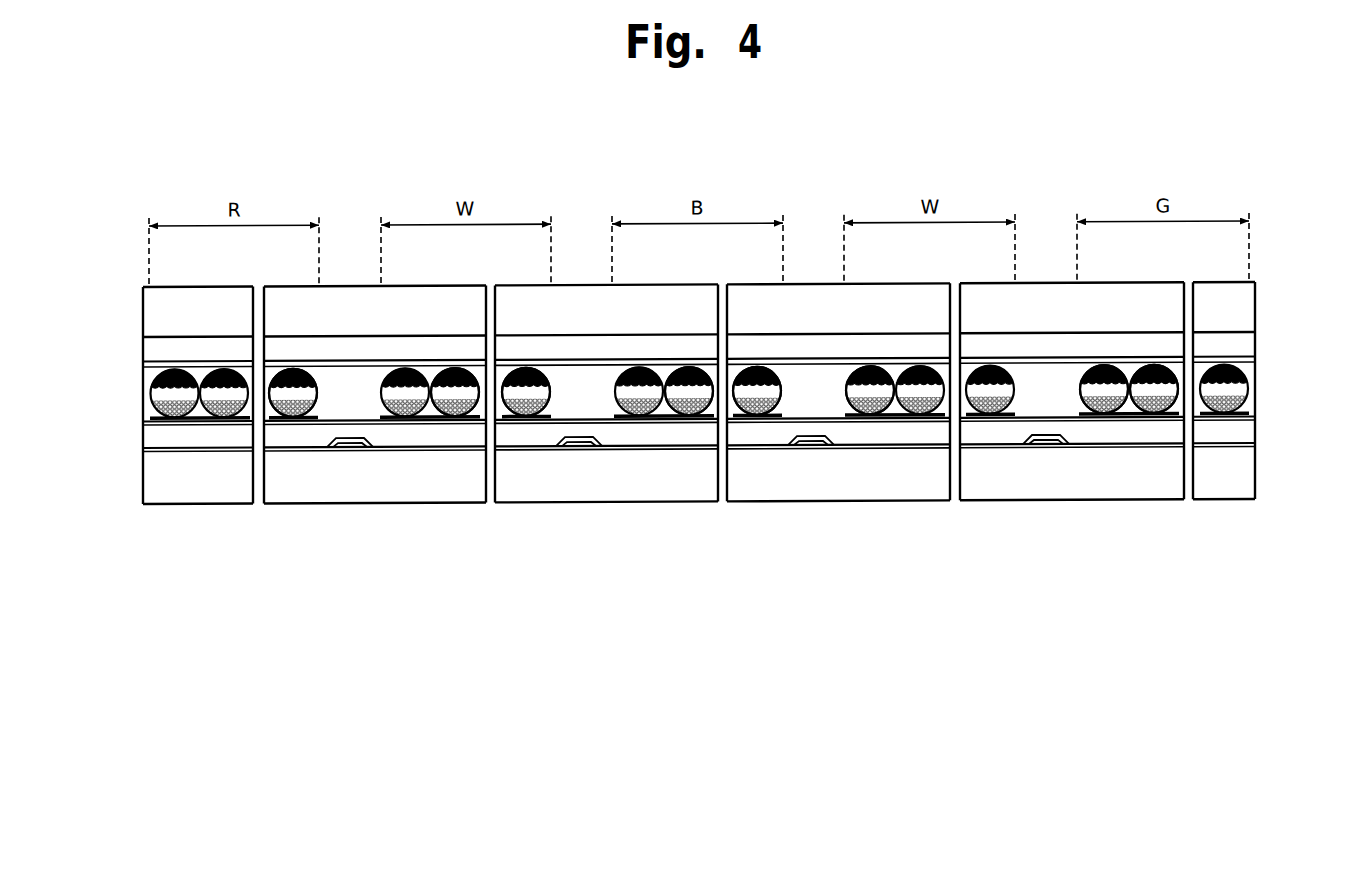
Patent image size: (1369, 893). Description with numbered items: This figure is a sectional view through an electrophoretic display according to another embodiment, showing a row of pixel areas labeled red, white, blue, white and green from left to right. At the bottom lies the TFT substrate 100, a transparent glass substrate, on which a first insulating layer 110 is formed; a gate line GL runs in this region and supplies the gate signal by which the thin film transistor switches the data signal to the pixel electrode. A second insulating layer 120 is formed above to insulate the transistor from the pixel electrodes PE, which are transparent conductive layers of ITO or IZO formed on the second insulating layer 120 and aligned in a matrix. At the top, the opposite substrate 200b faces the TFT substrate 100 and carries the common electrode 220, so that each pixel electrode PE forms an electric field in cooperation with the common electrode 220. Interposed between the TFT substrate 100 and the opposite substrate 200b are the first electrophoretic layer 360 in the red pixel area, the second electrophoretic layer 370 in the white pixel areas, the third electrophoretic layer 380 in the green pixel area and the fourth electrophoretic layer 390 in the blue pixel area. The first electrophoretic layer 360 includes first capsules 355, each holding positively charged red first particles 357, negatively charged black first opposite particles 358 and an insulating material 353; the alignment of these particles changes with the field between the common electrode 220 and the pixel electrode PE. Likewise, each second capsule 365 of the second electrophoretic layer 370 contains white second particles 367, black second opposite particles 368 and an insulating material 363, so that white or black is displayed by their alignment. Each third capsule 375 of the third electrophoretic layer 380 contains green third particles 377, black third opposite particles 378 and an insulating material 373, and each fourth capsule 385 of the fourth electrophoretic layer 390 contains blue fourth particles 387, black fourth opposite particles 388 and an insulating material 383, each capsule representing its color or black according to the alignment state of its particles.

The TFT substrate 100 is at (1252, 478).
The first insulating layer 110 is at (1251, 448).
The second insulating layer 120 is at (1251, 437).
The opposite substrate 200b is at (1251, 318).
The common electrode 220 is at (1251, 362).
The pixel electrode PE is at (203, 421).
The gate line GL is at (349, 453).
The first capsule 355 is at (72, 355).
The first particles 357 is at (155, 382).
The insulating material 353 is at (158, 395).
The first opposite particles 358 is at (158, 407).
The first electrophoretic layer 360 is at (320, 396).
The second capsule 365 is at (482, 560).
The second particles 367 is at (395, 386).
The insulating material 363 is at (405, 396).
The second opposite particles 368 is at (425, 406).
The second electrophoretic layer 370 is at (555, 397).
The third capsule 375 is at (1052, 560).
The third particles 377 is at (1082, 386).
The insulating material 373 is at (1103, 394).
The third opposite particles 378 is at (1122, 402).
The third electrophoretic layer 380 is at (1073, 392).
The fourth capsule 385 is at (712, 560).
The fourth particles 387 is at (629, 388).
The insulating material 383 is at (639, 398).
The fourth opposite particles 388 is at (659, 408).
The fourth electrophoretic layer 390 is at (785, 398).